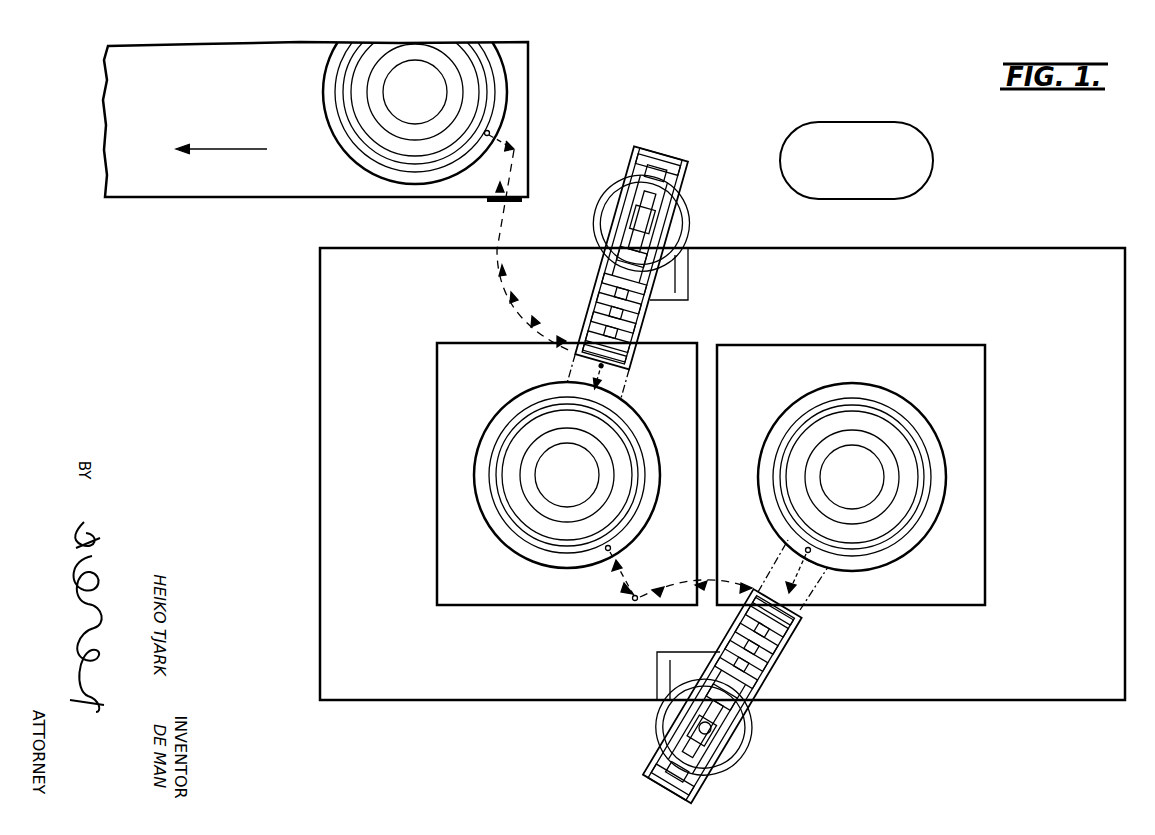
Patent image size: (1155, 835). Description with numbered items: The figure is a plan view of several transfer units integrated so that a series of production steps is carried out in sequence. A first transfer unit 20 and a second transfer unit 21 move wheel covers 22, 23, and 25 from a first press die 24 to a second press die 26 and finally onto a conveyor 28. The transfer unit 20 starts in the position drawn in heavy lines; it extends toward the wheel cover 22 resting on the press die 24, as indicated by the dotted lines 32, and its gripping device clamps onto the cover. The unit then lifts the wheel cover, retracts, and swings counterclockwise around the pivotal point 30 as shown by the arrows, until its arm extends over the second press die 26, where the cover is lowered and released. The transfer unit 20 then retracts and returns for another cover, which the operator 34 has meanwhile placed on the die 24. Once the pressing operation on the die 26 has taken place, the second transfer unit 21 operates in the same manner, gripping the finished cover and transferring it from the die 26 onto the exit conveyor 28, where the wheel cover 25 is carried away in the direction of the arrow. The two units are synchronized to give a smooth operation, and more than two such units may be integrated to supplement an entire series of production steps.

The transfer unit 20 is at (747, 689).
The transfer unit 21 is at (660, 225).
The wheel cover 22 is at (908, 544).
The wheel cover 23 is at (640, 432).
The press die 24 is at (975, 426).
The wheel cover 25 is at (352, 150).
The press die 26 is at (447, 546).
The conveyor 28 is at (222, 185).
The pivotal point 30 is at (722, 731).
The dotted lines 32 is at (812, 603).
The operator 34 is at (920, 170).